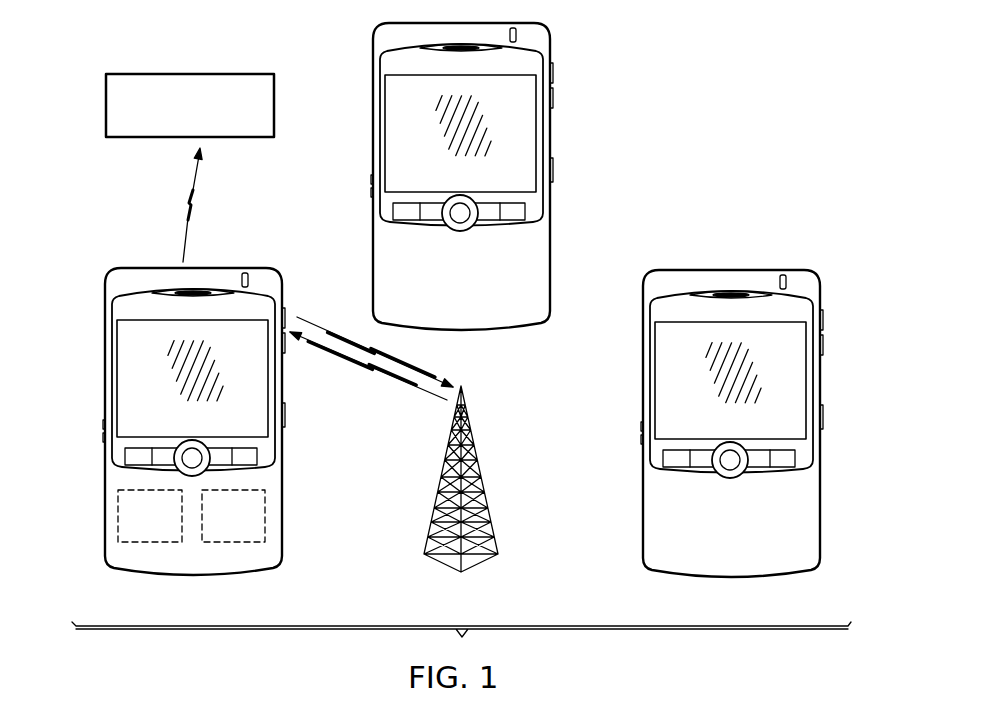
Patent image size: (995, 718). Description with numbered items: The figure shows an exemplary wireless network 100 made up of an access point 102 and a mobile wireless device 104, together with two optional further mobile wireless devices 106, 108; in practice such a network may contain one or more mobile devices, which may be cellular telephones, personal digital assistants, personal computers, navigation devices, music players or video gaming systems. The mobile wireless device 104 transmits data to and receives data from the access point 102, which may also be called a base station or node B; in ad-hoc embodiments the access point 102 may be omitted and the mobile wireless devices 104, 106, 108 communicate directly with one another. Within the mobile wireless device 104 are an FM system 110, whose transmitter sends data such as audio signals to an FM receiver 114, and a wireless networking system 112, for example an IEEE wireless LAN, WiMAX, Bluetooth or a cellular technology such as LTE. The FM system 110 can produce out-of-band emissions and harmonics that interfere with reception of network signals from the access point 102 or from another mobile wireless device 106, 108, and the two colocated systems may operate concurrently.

The wireless network 100 is at (770, 78).
The access point 102 is at (445, 563).
The mobile wireless device 104 is at (156, 421).
The mobile wireless device 106 is at (560, 136).
The mobile wireless device 108 is at (830, 483).
The FM system 110 is at (150, 516).
The wireless networking system 112 is at (233, 516).
The FM receiver 114 is at (106, 104).